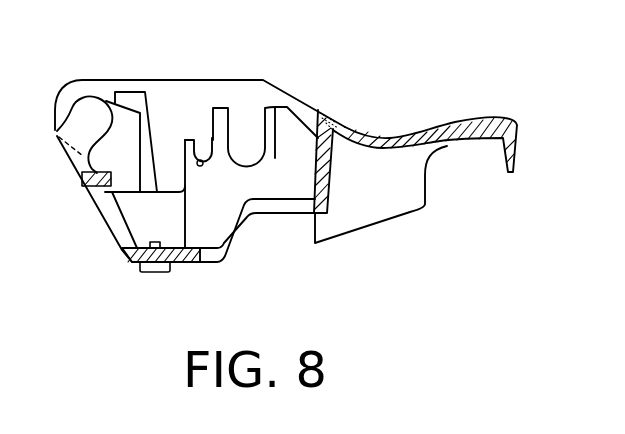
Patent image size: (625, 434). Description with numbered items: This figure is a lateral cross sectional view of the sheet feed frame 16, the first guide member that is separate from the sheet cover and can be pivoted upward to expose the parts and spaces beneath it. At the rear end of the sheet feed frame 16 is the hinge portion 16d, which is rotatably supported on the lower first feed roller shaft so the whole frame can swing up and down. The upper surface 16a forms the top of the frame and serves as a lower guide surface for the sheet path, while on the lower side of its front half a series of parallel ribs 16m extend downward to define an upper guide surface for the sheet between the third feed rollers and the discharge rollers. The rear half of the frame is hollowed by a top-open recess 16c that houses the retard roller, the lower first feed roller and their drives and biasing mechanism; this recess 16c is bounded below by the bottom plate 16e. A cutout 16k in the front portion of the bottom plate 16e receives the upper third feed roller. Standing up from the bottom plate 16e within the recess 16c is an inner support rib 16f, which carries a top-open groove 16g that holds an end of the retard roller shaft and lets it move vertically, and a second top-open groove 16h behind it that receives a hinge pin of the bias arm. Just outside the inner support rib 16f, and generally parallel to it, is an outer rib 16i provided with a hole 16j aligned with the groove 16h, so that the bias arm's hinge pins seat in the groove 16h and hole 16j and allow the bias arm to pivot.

The sheet feed frame 16 is at (350, 52).
The upper surface 16a is at (418, 130).
The recess 16c is at (195, 125).
The hinge portion 16d is at (67, 85).
The bottom plate 16e is at (177, 267).
The inner support rib 16f is at (308, 183).
The groove 16g is at (272, 158).
The groove 16h is at (205, 163).
The outer rib 16i is at (170, 228).
The hole 16j is at (203, 138).
The cutout 16k is at (235, 232).
The rib 16m is at (383, 218).